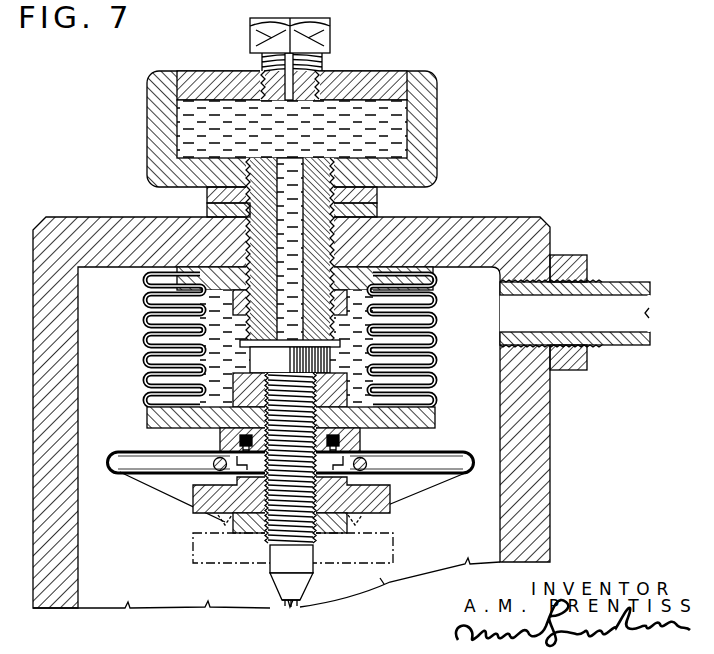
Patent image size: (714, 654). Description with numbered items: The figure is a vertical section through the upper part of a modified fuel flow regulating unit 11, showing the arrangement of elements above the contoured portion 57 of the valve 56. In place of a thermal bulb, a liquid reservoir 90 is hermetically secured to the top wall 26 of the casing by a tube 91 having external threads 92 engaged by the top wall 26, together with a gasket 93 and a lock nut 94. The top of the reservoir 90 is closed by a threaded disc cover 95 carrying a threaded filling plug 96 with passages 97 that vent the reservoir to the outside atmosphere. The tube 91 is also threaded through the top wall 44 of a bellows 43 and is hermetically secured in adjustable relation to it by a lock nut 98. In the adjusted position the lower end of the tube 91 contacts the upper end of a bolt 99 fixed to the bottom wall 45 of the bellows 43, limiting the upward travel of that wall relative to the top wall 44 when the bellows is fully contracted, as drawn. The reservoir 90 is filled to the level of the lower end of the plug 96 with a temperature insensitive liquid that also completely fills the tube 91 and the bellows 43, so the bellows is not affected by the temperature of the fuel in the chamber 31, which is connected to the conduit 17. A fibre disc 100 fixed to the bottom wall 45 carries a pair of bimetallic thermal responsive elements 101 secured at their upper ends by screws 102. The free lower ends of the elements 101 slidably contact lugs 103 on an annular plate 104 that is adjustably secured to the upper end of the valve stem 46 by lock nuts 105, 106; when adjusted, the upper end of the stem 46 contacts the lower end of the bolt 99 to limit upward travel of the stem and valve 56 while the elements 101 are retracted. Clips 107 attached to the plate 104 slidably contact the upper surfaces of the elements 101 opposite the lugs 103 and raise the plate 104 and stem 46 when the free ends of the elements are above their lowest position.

The regulating unit 11 is at (551, 193).
The conduit 17 is at (622, 284).
The top wall 26 is at (509, 218).
The chamber 31 is at (160, 598).
The bellows 43 is at (148, 338).
The top wall of bellows 44 is at (195, 281).
The bottom wall of bellows 45 is at (190, 420).
The valve stem 46 is at (276, 567).
The valve 56 is at (278, 604).
The contoured portion 57 is at (283, 612).
The liquid reservoir 90 is at (437, 121).
The tube 91 is at (377, 194).
The external threads 92 is at (177, 268).
The gasket 93 is at (207, 196).
The lock nut 94 is at (377, 212).
The threaded disc cover 95 is at (388, 78).
The threaded filling plug 96 is at (322, 35).
The passages 97 is at (262, 46).
The lock nut 98 is at (255, 326).
The bolt 99 is at (257, 360).
The fibre disc 100 is at (388, 447).
The bimetallic thermal responsive elements 101 is at (134, 455).
The screws 102 is at (242, 443).
The lugs 103 is at (238, 480).
The annular plate 104 is at (392, 517).
The lock nut 105 is at (207, 210).
The lock nut 106 is at (348, 522).
The clips 107 is at (366, 452).